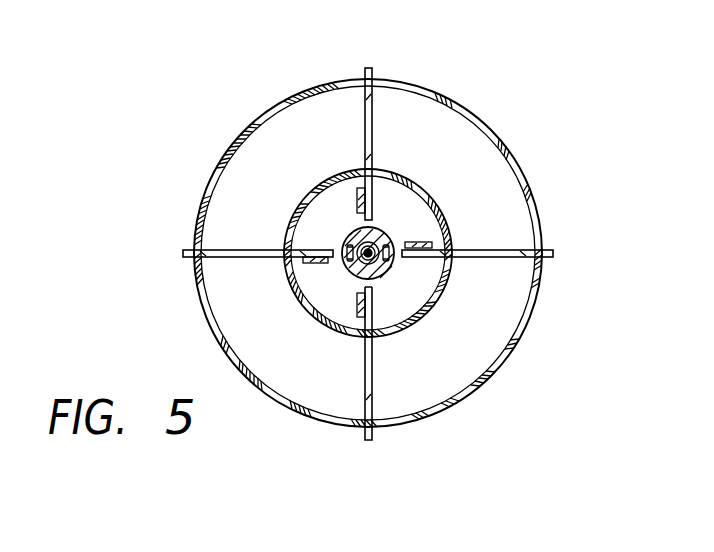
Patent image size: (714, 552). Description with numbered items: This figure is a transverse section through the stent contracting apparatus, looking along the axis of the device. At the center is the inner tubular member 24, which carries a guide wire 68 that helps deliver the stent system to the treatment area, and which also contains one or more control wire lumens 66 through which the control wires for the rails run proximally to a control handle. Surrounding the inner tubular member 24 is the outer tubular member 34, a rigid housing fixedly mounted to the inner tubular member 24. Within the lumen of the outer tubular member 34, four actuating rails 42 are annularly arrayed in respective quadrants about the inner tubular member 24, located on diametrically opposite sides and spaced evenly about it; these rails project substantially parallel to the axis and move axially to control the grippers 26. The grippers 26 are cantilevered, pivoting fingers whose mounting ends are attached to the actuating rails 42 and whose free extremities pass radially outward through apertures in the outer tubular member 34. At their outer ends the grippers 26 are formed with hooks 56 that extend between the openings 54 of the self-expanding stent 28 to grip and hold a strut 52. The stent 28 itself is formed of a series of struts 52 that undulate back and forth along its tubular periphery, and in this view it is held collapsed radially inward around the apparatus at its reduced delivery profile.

The inner tubular member 24 is at (394, 262).
The grippers 26 is at (368, 67).
The self-expanding stent 28 is at (479, 86).
The outer tubular member 34 is at (403, 173).
The actuating rails 42 is at (312, 263).
The struts 52 is at (490, 124).
The openings 54 is at (398, 80).
The hooks 56 is at (368, 441).
The control wire lumen 66 is at (385, 240).
The guide wire 68 is at (370, 262).